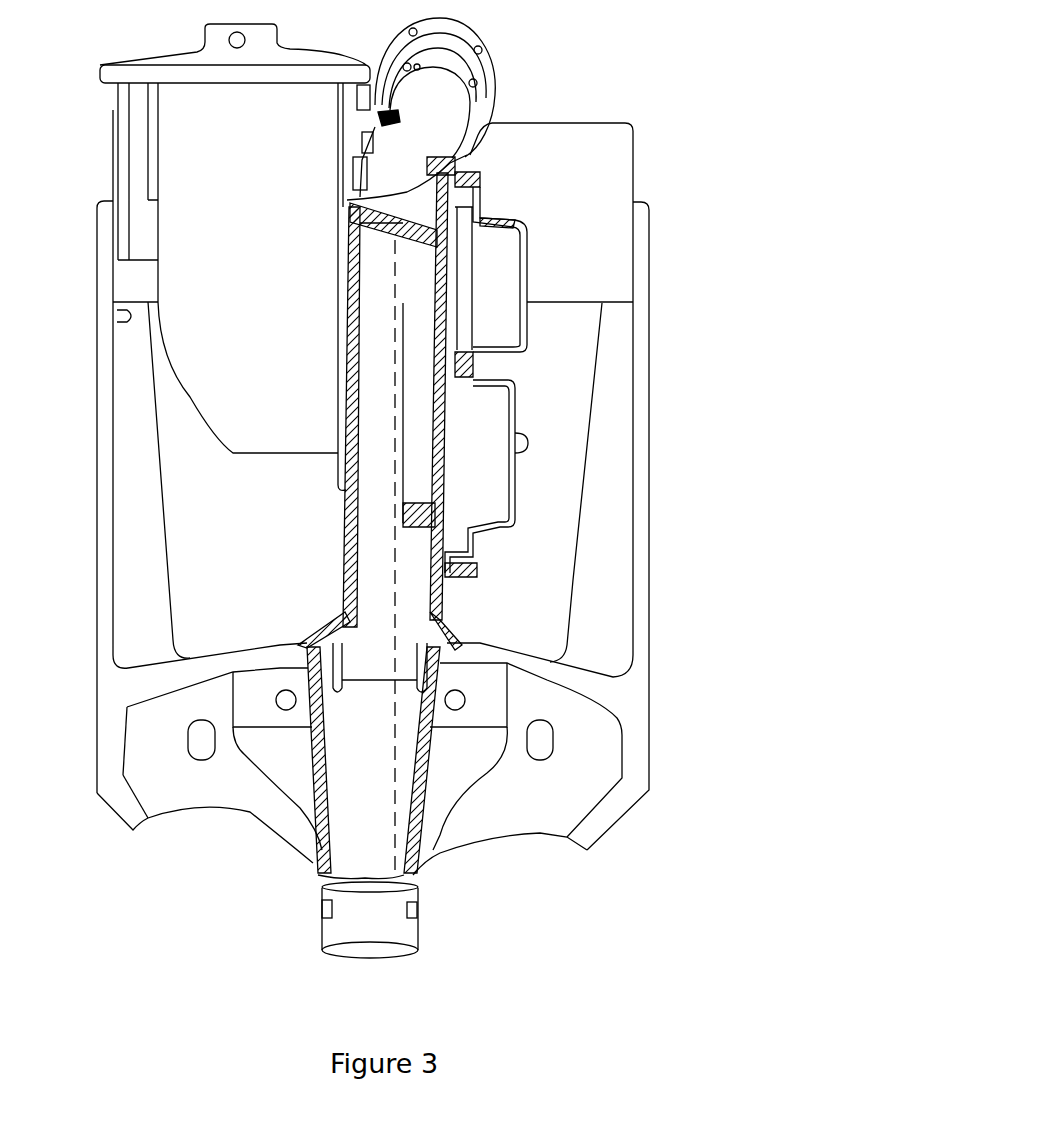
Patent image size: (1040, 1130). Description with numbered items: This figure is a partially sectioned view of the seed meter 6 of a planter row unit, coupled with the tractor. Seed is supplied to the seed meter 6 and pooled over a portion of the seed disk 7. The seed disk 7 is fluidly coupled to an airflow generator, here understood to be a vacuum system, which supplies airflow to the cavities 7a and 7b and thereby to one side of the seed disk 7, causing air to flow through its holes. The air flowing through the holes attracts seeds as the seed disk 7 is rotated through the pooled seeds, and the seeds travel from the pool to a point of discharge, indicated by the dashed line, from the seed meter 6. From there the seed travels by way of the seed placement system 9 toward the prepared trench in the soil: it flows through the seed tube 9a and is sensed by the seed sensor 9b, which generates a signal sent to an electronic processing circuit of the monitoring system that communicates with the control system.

The seed meter 6 is at (613, 90).
The seed disk 7 is at (460, 452).
The cavity 7a is at (455, 268).
The cavity 7b is at (483, 417).
The seed placement system 9 is at (131, 887).
The seed tube 9a is at (322, 930).
The seed sensor 9b is at (320, 905).